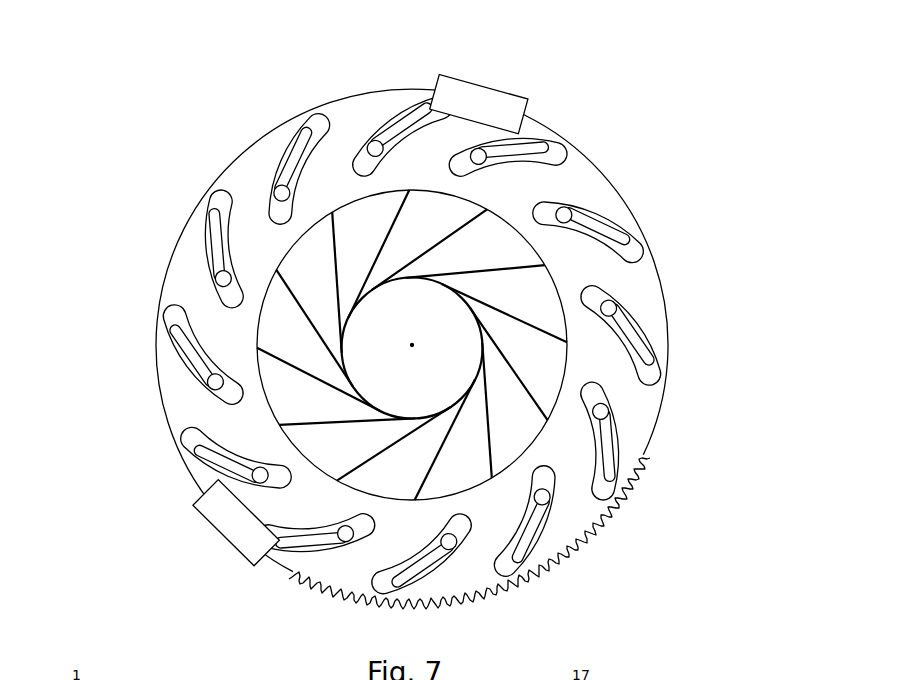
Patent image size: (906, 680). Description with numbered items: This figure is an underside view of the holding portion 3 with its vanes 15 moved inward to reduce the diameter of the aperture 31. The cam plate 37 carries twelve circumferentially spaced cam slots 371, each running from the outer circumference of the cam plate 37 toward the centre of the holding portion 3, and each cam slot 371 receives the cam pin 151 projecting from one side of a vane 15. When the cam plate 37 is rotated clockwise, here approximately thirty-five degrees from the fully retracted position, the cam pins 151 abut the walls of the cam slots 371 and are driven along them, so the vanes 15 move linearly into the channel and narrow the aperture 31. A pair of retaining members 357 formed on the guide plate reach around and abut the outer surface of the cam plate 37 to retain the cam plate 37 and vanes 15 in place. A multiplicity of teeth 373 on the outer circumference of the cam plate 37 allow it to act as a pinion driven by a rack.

The holding portion 3 is at (744, 89).
The vane 15 is at (535, 298).
The aperture 31 is at (380, 348).
The cam plate 37 is at (251, 181).
The cam pin 151 is at (567, 212).
The retaining member 357 is at (498, 97).
The cam slot 371 is at (626, 250).
The teeth 373 is at (600, 549).